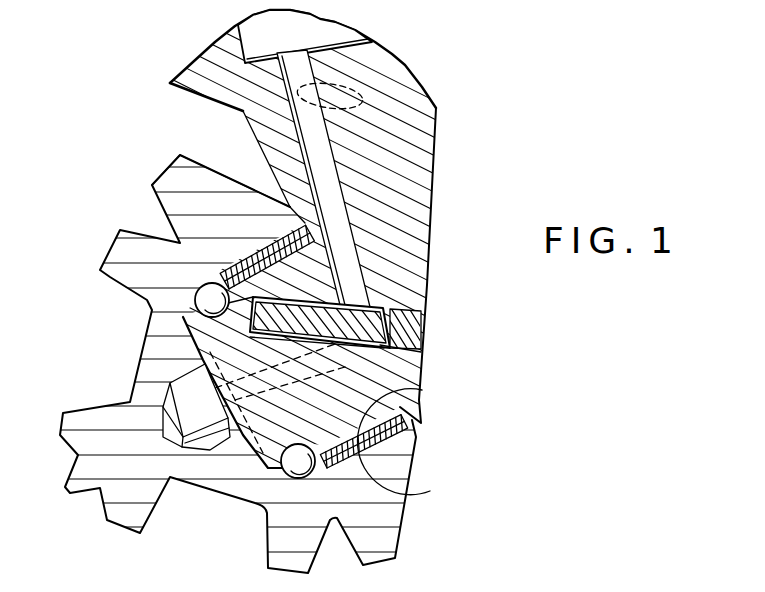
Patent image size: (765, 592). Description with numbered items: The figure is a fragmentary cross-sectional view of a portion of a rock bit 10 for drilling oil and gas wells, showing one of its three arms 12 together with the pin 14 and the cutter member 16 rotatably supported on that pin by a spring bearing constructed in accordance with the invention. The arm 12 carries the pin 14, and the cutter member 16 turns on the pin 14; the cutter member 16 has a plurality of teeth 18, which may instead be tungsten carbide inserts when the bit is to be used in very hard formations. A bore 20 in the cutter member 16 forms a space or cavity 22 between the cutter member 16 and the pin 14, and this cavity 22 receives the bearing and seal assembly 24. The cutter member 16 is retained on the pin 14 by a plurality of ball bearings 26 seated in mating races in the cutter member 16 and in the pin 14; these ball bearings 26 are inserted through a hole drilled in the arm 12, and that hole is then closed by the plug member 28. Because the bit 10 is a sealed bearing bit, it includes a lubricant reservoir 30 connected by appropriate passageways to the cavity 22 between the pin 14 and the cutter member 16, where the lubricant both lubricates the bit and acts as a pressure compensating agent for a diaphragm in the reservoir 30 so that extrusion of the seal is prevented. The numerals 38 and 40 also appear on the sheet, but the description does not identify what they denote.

The rock bit 10 is at (475, 92).
The arm 12 is at (437, 172).
The pin 14 is at (180, 447).
The cutter member 16 is at (197, 197).
The teeth 18 is at (73, 413).
The bore 20 is at (382, 405).
The cavity 22 is at (430, 491).
The bearing and seal assembly 24 is at (232, 257).
The ball bearings 26 is at (200, 293).
The plug member 28 is at (387, 323).
The lubricant reservoir 30 is at (238, 25).
The reference 38 is at (511, 582).
The reference 40 is at (582, 580).